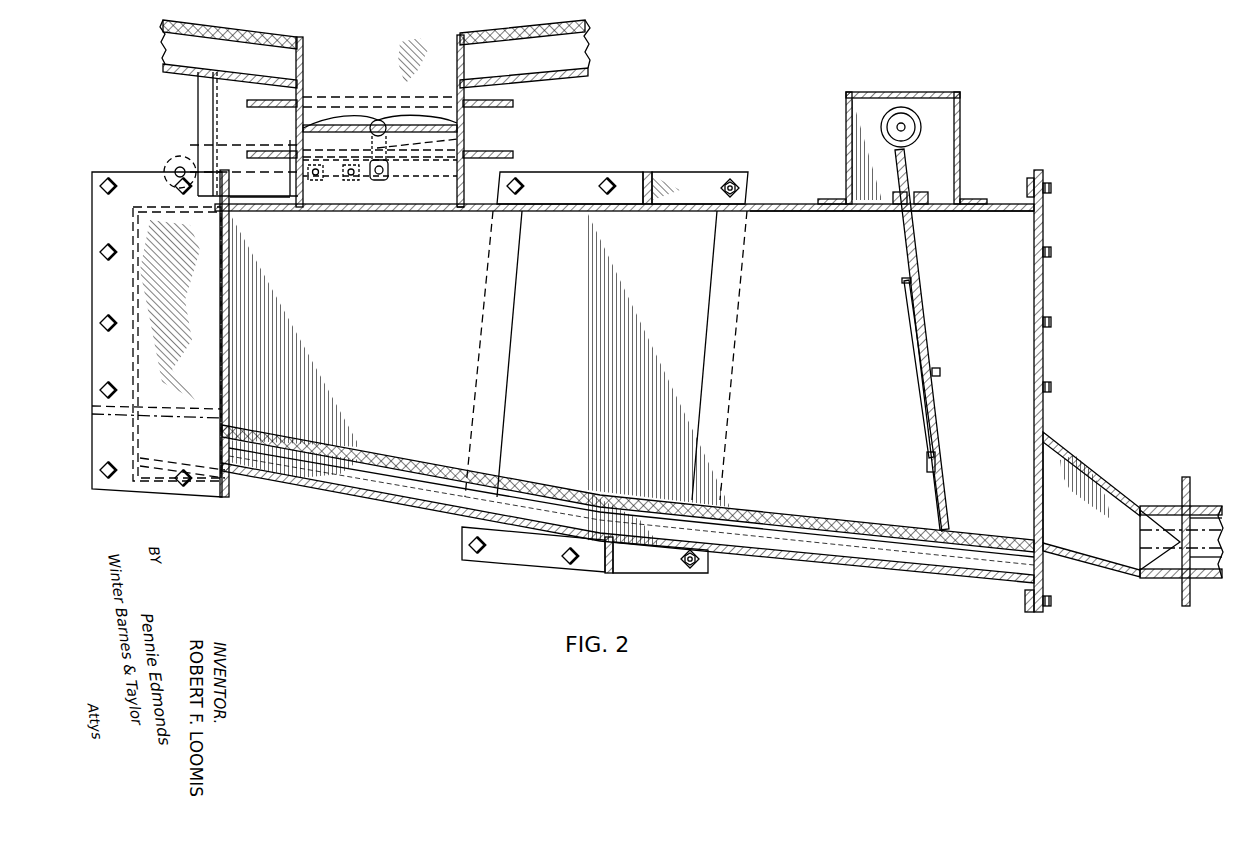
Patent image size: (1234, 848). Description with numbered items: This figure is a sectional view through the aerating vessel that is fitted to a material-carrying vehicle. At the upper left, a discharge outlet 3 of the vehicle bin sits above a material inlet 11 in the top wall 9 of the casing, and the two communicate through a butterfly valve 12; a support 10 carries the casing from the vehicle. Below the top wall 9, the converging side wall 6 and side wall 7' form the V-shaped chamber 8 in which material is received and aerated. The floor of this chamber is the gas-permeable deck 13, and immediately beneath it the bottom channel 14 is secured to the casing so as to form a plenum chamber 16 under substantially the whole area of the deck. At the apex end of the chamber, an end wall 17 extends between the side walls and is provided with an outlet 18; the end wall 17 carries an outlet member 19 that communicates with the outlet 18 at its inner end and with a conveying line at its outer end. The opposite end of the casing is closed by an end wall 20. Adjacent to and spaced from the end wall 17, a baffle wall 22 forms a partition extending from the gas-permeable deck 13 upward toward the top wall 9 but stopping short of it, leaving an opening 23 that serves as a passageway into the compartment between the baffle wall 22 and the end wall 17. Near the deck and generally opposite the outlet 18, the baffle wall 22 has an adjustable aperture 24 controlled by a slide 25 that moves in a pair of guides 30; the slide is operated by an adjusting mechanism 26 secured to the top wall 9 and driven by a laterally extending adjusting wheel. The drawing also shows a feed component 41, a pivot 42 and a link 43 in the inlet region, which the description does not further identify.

The discharge outlet 3 is at (375, 113).
The side wall 6 is at (447, 452).
The side wall 7' is at (611, 359).
The V-shaped chamber 8 is at (891, 372).
The top wall 9 is at (766, 205).
The support 10 is at (198, 95).
The material inlet 11 is at (462, 199).
The butterfly valve 12 is at (463, 125).
The gas-permeable deck 13 is at (384, 460).
The bottom channel 14 is at (312, 485).
The plenum chamber 16 is at (414, 487).
The end wall 17 is at (1045, 295).
The outlet 18 is at (1048, 446).
The outlet member 19 is at (1100, 480).
The end wall 20 is at (107, 172).
The baffle wall 22 is at (905, 283).
The opening 23 is at (846, 243).
The adjustable aperture 24 is at (936, 499).
The slide 25 is at (935, 460).
The adjusting mechanism 26 is at (960, 133).
The guides 30 is at (950, 500).
The feeder belt 41 is at (303, 119).
The pivot 42 is at (177, 158).
The feeder link 43 is at (462, 140).